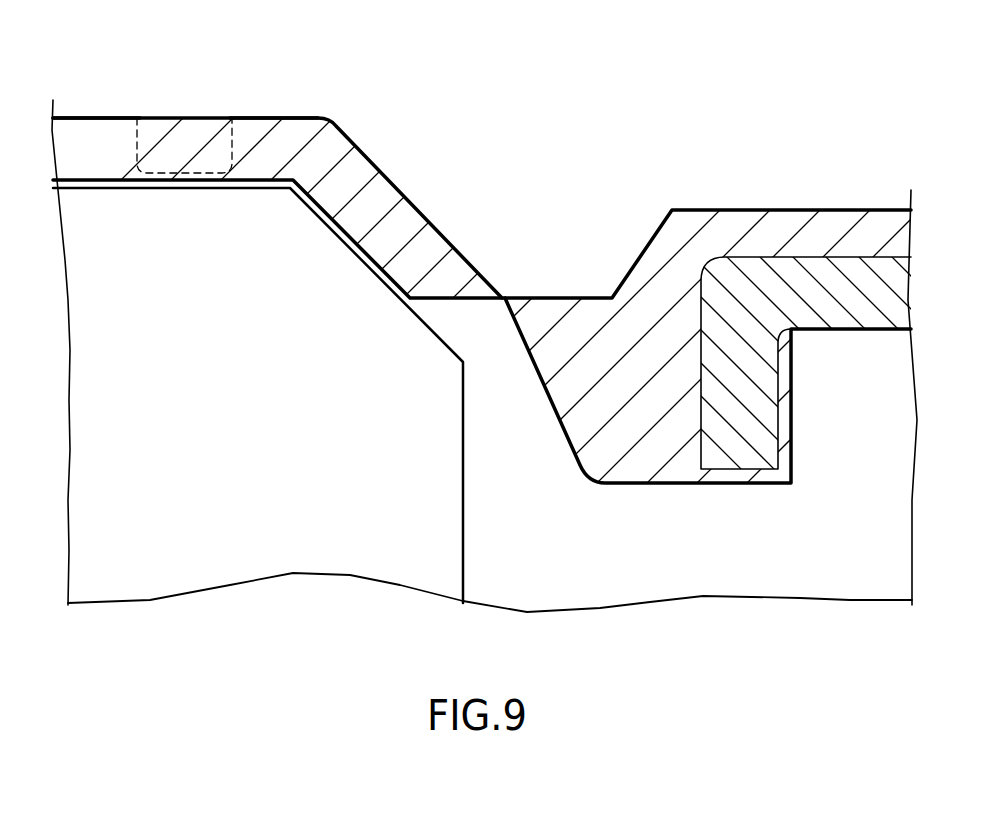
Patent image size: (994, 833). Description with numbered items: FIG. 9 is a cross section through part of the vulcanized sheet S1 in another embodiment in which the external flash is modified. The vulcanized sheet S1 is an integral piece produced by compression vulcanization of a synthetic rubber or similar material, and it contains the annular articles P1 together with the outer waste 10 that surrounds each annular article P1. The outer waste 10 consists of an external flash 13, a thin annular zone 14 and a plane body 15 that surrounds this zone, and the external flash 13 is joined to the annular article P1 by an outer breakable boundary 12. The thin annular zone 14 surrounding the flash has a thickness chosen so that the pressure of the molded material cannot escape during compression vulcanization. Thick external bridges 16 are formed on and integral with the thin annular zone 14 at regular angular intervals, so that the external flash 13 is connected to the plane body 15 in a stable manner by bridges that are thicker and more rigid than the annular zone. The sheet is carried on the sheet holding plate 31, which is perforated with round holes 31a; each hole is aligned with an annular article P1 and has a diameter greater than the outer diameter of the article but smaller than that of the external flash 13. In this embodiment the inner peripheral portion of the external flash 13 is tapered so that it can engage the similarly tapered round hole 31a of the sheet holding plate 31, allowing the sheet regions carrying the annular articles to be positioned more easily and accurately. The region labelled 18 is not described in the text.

The vulcanized sheet S1 is at (86, 108).
The outer waste 10 is at (248, 90).
The outer breakable boundary 12 is at (505, 298).
The external flash 13 is at (300, 130).
The thin annular zone 14 is at (183, 178).
The plane body 15 is at (113, 117).
The external bridge 16 is at (194, 123).
The insulating filler 18 is at (848, 313).
The sheet holding plate 31 is at (247, 471).
The round hole 31a is at (430, 328).
The annular article P1 is at (725, 220).